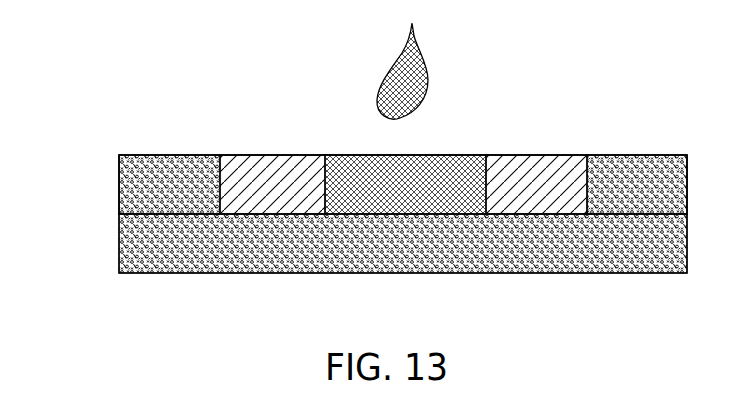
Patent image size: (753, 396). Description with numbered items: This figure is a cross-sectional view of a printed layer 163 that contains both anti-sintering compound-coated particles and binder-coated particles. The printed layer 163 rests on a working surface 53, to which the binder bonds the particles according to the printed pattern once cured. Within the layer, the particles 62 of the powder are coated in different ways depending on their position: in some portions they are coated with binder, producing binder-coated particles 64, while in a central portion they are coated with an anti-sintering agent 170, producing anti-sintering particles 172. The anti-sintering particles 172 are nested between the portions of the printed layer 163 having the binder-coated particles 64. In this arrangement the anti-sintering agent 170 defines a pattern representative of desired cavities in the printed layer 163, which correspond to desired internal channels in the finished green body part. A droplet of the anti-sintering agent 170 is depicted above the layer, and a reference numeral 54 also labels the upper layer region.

The printed layer 163 is at (126, 43).
The working surface 53 is at (119, 240).
The top layer 54 is at (119, 190).
The particles 62 is at (658, 155).
The binder-coated particles 64 is at (282, 155).
The anti-sintering agent 170 is at (424, 63).
The anti-sintering particles 172 is at (362, 153).